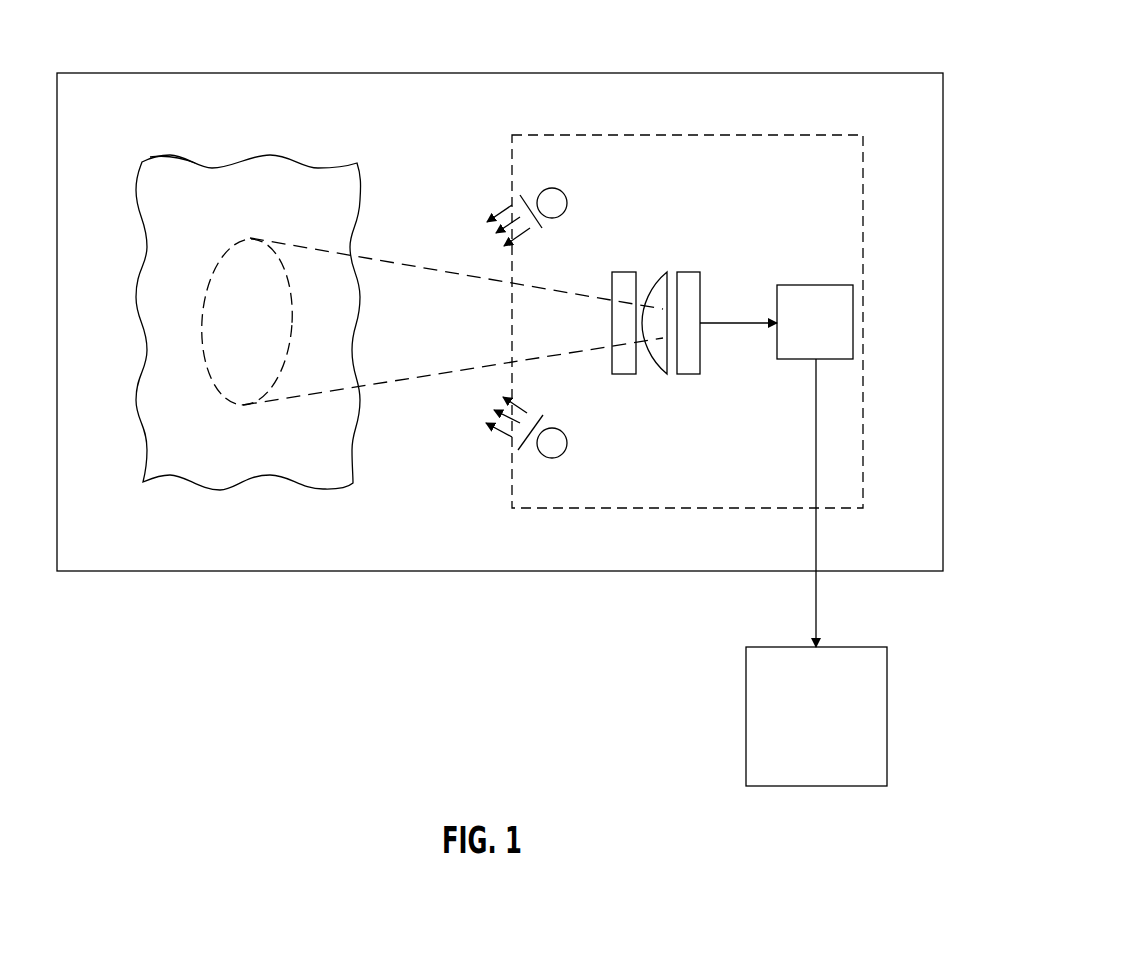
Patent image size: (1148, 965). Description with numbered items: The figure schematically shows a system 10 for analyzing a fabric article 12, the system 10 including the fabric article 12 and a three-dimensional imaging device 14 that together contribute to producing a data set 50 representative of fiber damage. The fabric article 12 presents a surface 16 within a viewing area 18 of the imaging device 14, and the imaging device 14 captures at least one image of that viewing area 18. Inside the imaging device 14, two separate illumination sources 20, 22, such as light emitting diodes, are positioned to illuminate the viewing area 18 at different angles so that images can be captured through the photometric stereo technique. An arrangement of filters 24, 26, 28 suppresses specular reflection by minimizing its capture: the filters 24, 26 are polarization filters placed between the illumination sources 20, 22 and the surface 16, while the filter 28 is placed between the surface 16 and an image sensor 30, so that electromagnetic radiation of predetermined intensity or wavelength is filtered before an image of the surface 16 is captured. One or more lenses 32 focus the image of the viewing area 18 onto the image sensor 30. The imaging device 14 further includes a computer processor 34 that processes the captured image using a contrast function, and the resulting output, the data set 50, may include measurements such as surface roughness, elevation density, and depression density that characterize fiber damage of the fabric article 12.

The system 10 is at (745, 35).
The fabric article 12 is at (302, 158).
The three-dimensional imaging device 14 is at (812, 135).
The surface 16 is at (202, 172).
The viewing area 18 is at (235, 247).
The illumination source 20 is at (554, 190).
The illumination source 22 is at (565, 432).
The filter 24 is at (537, 188).
The filter 26 is at (528, 450).
The filter 28 is at (622, 272).
The image sensor 30 is at (690, 272).
The lens 32 is at (658, 272).
The computer processor 34 is at (817, 285).
The data set 50 is at (862, 647).